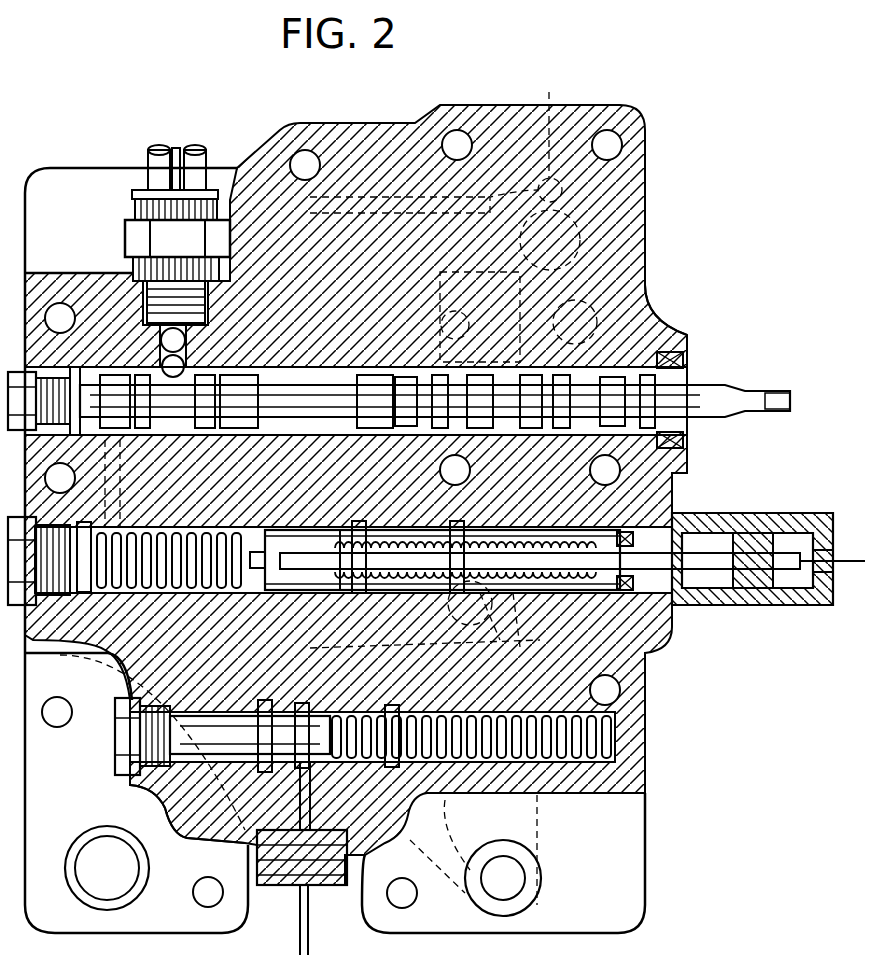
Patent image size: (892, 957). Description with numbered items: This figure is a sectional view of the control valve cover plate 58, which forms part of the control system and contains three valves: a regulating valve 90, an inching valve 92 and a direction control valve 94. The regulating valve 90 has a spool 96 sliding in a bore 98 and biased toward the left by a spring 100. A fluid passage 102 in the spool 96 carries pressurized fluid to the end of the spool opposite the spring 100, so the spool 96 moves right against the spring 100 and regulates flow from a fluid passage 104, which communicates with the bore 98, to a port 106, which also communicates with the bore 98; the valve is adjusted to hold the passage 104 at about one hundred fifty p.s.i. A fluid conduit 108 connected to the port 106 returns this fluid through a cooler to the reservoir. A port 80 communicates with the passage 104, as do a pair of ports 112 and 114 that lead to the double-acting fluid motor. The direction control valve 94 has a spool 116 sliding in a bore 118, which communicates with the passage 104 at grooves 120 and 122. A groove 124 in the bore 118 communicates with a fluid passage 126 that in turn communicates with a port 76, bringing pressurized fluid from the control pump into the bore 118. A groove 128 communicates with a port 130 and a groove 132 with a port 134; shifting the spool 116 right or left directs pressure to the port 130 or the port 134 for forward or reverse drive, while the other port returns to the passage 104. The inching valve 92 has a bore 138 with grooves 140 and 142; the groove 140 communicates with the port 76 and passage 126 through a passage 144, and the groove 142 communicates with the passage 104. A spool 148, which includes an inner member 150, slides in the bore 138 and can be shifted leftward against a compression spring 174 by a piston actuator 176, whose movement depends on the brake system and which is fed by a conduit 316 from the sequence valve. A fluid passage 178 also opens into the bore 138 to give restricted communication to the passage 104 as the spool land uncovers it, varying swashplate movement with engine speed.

The control valve cover plate 58 is at (674, 96).
The port 130 is at (445, 171).
The port 112 is at (652, 292).
The port 114 is at (668, 328).
The port 134 is at (578, 305).
The groove 128 is at (433, 365).
The groove 132 is at (522, 363).
The groove 124 is at (500, 365).
The direction control valve 94 is at (331, 360).
The bore 118 is at (239, 401).
The spool 116 is at (375, 401).
The groove 120 is at (395, 437).
The fluid passage 126 is at (460, 438).
The groove 122 is at (525, 438).
The fluid passage 104 is at (697, 462).
The compression spring 174 is at (170, 528).
The inching valve 92 is at (243, 506).
The bore 138 is at (300, 527).
The groove 142 is at (355, 527).
The fluid passage 178 is at (376, 521).
The groove 140 is at (452, 521).
The spool 148 is at (510, 530).
The port 80 is at (672, 499).
The conduit 316 is at (848, 556).
The piston actuator 176 is at (736, 606).
The passage 144 is at (448, 622).
The port 76 is at (518, 646).
The spool 96 is at (222, 698).
The inner member 150 is at (302, 703).
The fluid passage 102 is at (178, 777).
The bore 98 is at (260, 776).
The regulating valve 90 is at (333, 790).
The spring 100 is at (493, 766).
The port 106 is at (342, 886).
The fluid conduit 108 is at (298, 932).